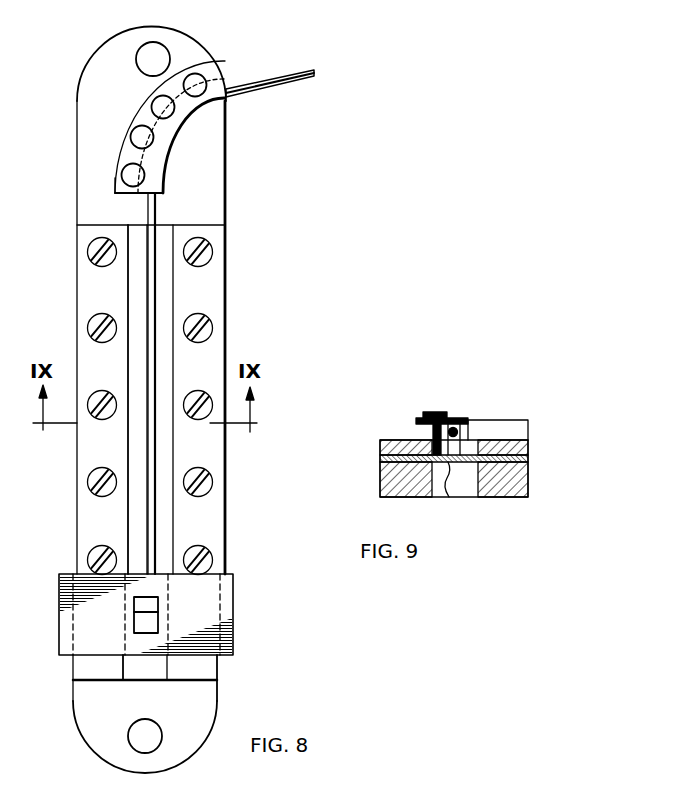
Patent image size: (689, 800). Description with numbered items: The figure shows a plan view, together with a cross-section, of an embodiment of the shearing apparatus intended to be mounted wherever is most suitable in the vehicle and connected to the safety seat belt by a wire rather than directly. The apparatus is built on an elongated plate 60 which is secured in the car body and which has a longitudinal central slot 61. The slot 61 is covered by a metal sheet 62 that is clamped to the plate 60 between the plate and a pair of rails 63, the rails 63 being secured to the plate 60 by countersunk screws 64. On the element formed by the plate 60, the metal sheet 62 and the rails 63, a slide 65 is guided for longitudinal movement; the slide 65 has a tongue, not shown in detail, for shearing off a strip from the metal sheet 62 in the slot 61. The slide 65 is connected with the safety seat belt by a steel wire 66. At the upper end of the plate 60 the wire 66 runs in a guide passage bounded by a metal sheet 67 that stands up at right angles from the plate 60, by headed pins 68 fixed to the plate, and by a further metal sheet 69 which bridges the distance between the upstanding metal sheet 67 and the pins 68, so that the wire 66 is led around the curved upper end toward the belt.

In FIG. 8, the elongated plate 60 is at (216, 155).
In FIG. 9, the longitudinal central slot 61 is at (468, 490).
In FIG. 8, the metal sheet 62 is at (165, 283).
In FIG. 9, the metal sheet 62 is at (448, 497).
In FIG. 9, the rails 63 is at (380, 449).
In FIG. 8, the countersunk screws 64 is at (205, 560).
In FIG. 9, the countersunk screws 64 is at (405, 438).
In FIG. 8, the slide 65 is at (233, 620).
In FIG. 8, the steel wire 66 is at (297, 78).
In FIG. 8, the metal sheet 67 is at (166, 133).
In FIG. 9, the metal sheet 67 is at (522, 404).
In FIG. 8, the headed pins 68 is at (140, 140).
In FIG. 9, the headed pins 68 is at (437, 416).
In FIG. 8, the metal sheet 69 is at (120, 157).
In FIG. 9, the metal sheet 69 is at (455, 426).